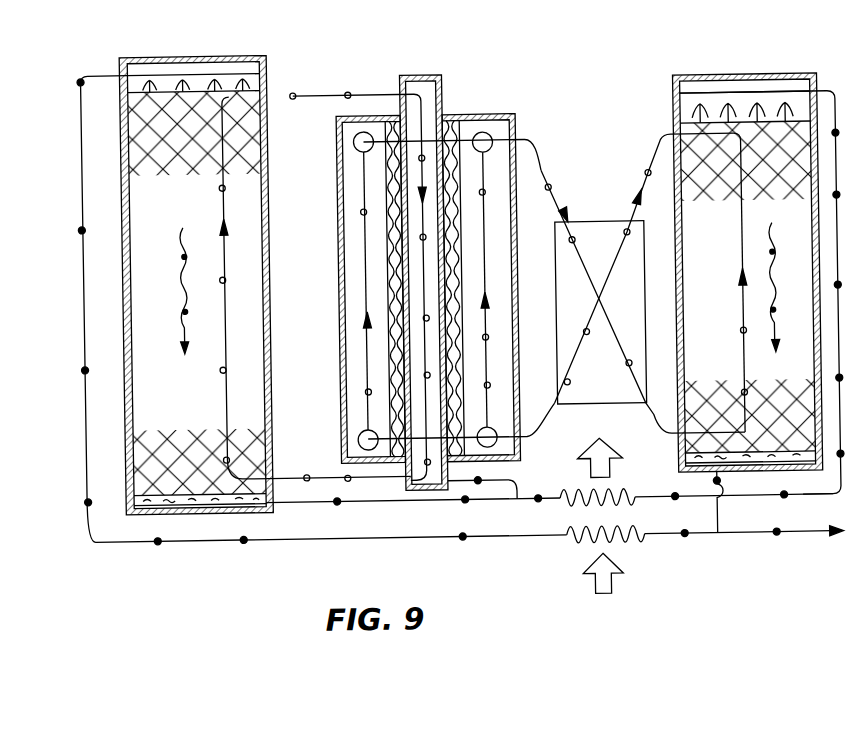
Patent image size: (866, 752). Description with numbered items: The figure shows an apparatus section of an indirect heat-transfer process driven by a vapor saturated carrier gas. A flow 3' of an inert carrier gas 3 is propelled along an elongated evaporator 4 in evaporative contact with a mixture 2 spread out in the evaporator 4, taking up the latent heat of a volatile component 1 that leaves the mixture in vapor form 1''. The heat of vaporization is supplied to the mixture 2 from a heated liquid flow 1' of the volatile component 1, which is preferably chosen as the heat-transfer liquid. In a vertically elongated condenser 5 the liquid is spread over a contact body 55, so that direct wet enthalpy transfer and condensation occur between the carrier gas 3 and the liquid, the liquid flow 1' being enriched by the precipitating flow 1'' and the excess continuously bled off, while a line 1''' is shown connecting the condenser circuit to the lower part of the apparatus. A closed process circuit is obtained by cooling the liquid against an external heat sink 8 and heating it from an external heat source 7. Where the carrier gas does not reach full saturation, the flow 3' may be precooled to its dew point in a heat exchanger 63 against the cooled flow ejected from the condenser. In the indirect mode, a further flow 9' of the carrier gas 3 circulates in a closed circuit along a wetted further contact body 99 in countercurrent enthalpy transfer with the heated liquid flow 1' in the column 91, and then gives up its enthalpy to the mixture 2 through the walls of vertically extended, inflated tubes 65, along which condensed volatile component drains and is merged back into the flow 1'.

The volatile component 1 is at (454, 298).
The liquid flow of volatile component 1' is at (114, 291).
The vapor flow of volatile component 1'' is at (465, 534).
The solvent return line 1''' is at (549, 481).
The mixture 2 is at (392, 221).
The inert carrier gas 3 is at (482, 266).
The carrier gas flow 3' is at (642, 284).
The evaporator 4 is at (503, 120).
The condenser 5 is at (689, 108).
The external heat source 7 is at (601, 458).
The external heat sink 8 is at (581, 566).
The further carrier gas flow 9' is at (305, 271).
The contact body 55 is at (699, 276).
The heat exchanger 63 is at (608, 226).
The tubes 65 is at (411, 363).
The desorption tank 91 is at (200, 88).
The further contact body 99 is at (171, 156).